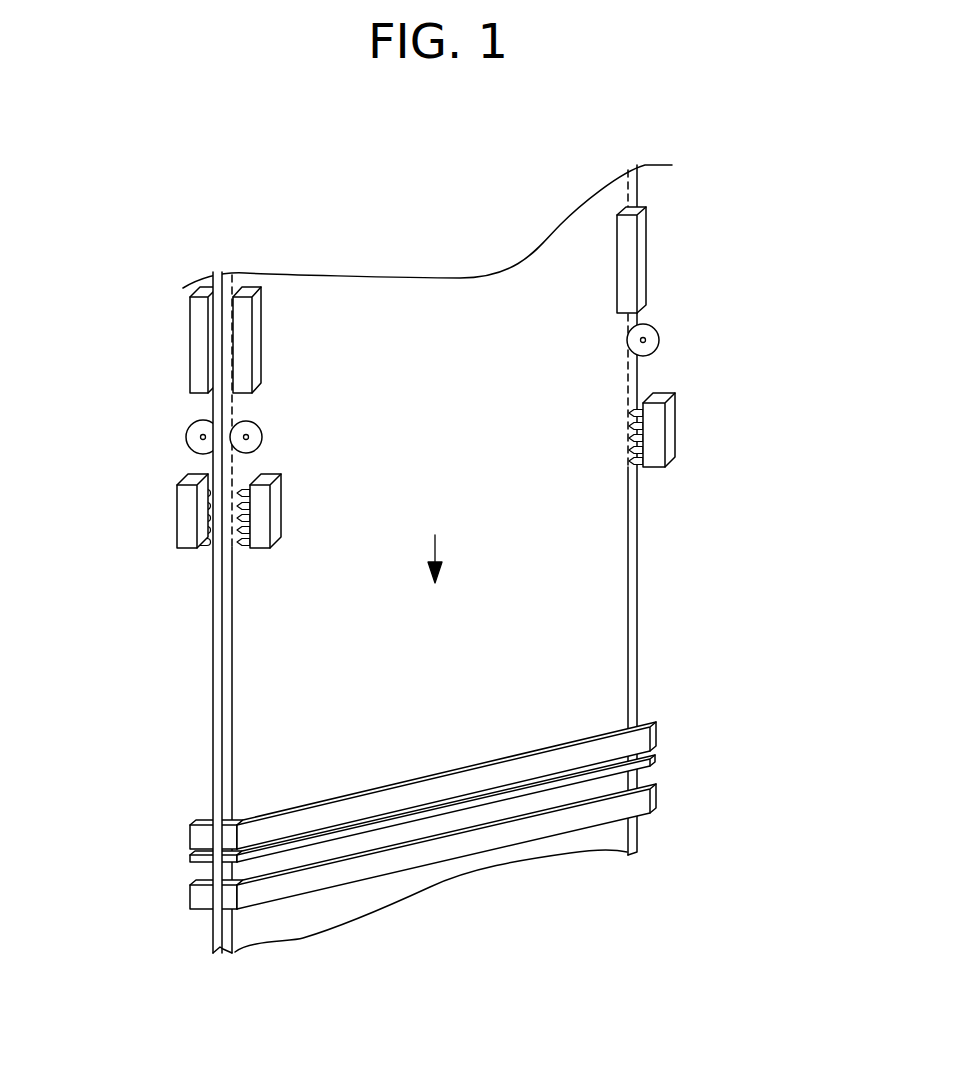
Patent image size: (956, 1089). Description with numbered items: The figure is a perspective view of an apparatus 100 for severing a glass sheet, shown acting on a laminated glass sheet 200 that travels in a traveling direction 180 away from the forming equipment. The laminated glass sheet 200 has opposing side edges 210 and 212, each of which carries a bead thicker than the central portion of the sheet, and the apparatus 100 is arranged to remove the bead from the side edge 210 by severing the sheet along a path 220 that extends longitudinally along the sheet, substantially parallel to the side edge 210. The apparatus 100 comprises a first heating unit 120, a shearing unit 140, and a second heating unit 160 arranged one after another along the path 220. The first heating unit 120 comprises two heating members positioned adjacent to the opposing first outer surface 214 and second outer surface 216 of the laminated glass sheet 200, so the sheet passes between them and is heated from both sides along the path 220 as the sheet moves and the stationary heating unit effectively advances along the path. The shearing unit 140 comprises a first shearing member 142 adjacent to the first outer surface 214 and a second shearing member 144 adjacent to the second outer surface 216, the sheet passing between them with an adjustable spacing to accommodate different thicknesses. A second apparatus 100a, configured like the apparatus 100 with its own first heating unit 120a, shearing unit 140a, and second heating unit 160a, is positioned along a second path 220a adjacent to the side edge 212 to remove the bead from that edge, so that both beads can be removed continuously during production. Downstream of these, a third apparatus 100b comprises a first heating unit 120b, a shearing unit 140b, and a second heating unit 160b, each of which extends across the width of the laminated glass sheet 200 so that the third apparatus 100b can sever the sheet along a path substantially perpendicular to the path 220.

The apparatus for severing a glass sheet 100 is at (206, 417).
The second apparatus 100a is at (651, 337).
The third apparatus 100b is at (486, 793).
The first heating unit 120 is at (252, 342).
The first heating unit 120a is at (615, 273).
The first heating unit 120b is at (467, 782).
The shearing unit 140 is at (228, 428).
The shearing unit 140a is at (660, 340).
The shearing unit 140b is at (650, 760).
The first shearing member 142 is at (257, 421).
The second shearing member 144 is at (188, 444).
The second heating unit 160 is at (283, 508).
The second heating unit 160a is at (675, 420).
The second heating unit 160b is at (597, 810).
The traveling direction 180 is at (435, 541).
The laminated glass sheet 200 is at (427, 559).
The side edge 210 is at (183, 612).
The side edge 212 is at (638, 595).
The first outer surface 214 is at (250, 752).
The second outer surface 216 is at (212, 697).
The path 220 is at (233, 608).
The second path 220a is at (627, 516).